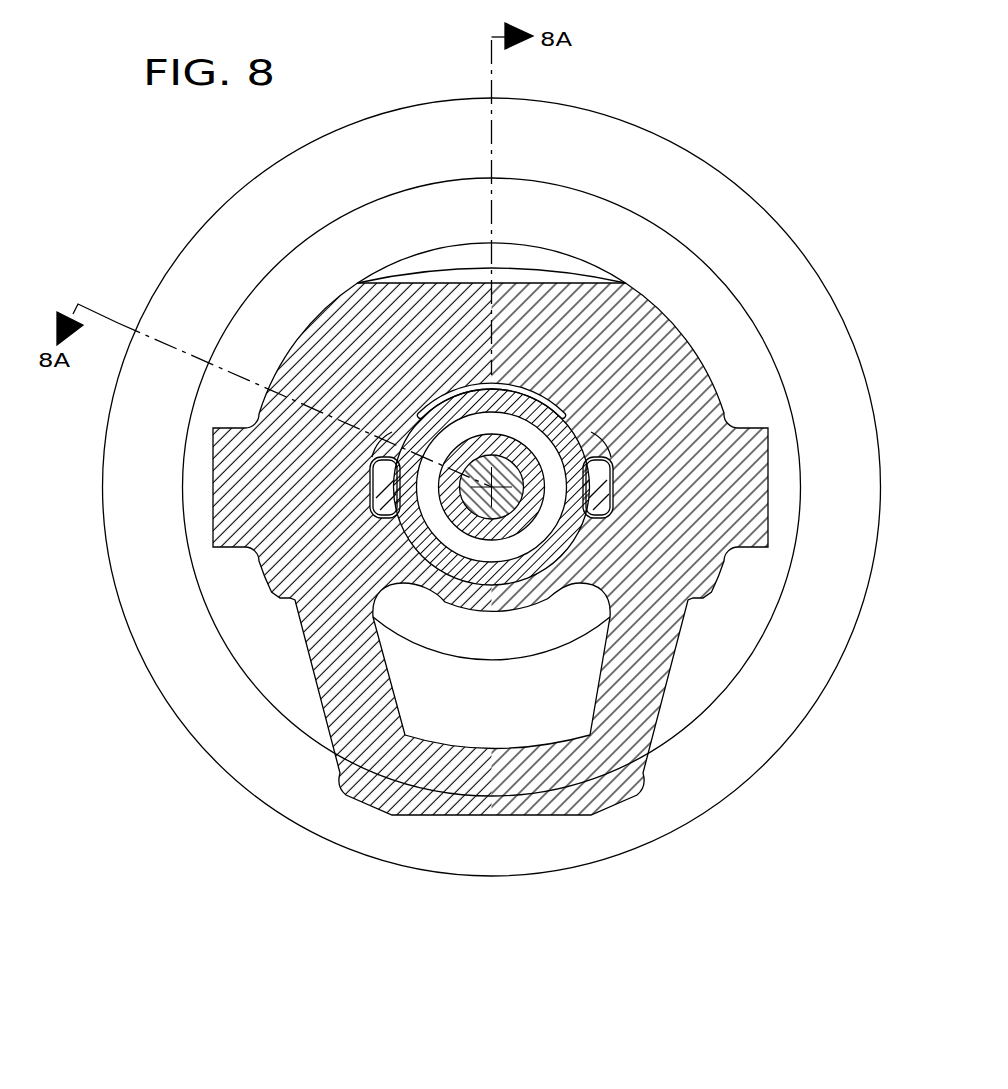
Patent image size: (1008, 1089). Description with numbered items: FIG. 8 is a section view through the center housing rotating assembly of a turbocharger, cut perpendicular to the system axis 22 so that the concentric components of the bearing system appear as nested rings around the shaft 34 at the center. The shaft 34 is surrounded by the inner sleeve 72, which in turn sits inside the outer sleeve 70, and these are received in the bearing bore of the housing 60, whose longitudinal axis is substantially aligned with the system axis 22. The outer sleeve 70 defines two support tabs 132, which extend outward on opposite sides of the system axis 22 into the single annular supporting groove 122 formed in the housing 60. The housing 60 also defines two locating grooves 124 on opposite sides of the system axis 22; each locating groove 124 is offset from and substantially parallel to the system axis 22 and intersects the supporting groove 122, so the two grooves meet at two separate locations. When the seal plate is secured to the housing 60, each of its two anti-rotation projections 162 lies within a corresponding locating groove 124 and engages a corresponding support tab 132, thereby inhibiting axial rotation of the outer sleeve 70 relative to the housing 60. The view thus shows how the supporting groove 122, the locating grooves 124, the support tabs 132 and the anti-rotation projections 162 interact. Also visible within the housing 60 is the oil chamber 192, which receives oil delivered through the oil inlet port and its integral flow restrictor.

The system axis 22 is at (603, 403).
The shaft 34 is at (510, 510).
The housing 60 is at (427, 790).
The outer sleeve 70 is at (495, 550).
The inner sleeve 72 is at (525, 522).
The supporting groove 122 is at (546, 406).
The locating groove 124 is at (612, 457).
The support tab 132 is at (417, 440).
The anti-rotation projection 162 is at (363, 493).
The oil chamber 192 is at (513, 378).